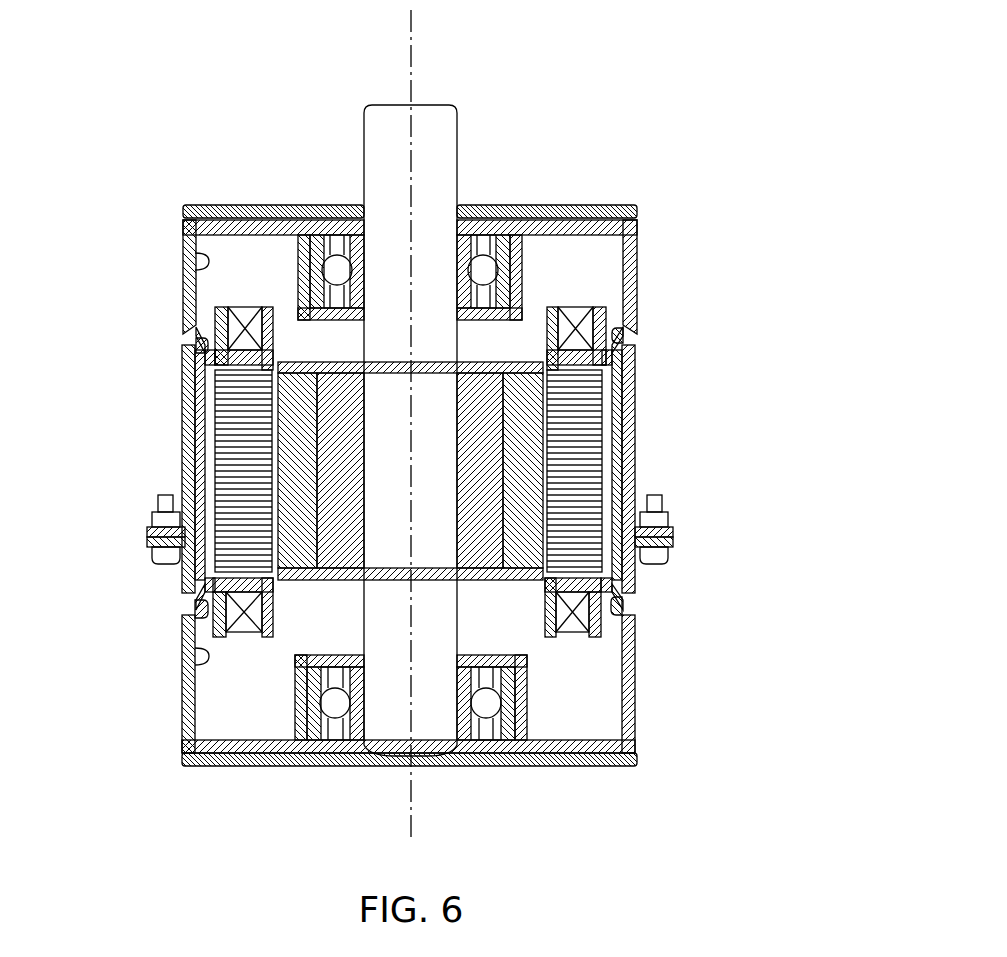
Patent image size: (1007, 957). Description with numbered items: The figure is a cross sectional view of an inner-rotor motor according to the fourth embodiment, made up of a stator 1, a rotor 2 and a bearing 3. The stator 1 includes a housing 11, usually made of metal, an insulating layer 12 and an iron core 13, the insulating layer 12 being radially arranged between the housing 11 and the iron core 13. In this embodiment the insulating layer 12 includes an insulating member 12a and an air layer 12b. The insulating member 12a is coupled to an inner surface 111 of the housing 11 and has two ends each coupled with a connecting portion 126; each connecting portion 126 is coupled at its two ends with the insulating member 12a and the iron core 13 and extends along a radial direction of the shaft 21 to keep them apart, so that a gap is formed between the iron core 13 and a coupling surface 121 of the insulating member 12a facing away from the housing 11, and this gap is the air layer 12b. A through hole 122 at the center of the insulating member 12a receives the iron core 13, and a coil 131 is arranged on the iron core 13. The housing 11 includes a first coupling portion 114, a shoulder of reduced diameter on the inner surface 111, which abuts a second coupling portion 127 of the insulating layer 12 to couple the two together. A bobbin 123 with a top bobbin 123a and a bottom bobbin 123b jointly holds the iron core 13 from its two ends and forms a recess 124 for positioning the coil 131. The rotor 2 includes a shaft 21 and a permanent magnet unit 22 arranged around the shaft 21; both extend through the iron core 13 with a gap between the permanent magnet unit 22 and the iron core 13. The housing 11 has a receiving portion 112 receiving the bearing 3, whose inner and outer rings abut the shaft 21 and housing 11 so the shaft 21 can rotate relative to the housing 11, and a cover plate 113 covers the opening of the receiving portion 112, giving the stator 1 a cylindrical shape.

The stator 1 is at (86, 320).
The rotor 2 is at (497, 54).
The bearing 3 is at (348, 234).
The housing 11 is at (183, 300).
The insulating layer 12 is at (200, 343).
The insulating member 12a is at (200, 443).
The air layer 12b is at (202, 468).
The iron core 13 is at (228, 429).
The shaft 21 is at (447, 165).
The permanent magnet unit 22 is at (525, 360).
The inner surface 111 is at (197, 268).
The receiving portion 112 is at (317, 228).
The cover plate 113 is at (598, 206).
The first coupling portion 114 is at (183, 618).
The coupling surface 121 is at (215, 396).
The through hole 122 is at (286, 320).
The bobbin 123 is at (735, 508).
The top bobbin 123a is at (605, 313).
The bottom bobbin 123b is at (602, 632).
The recess 124 is at (237, 635).
The connecting portion 126 is at (205, 576).
The second coupling portion 127 is at (196, 584).
The coil 131 is at (237, 318).